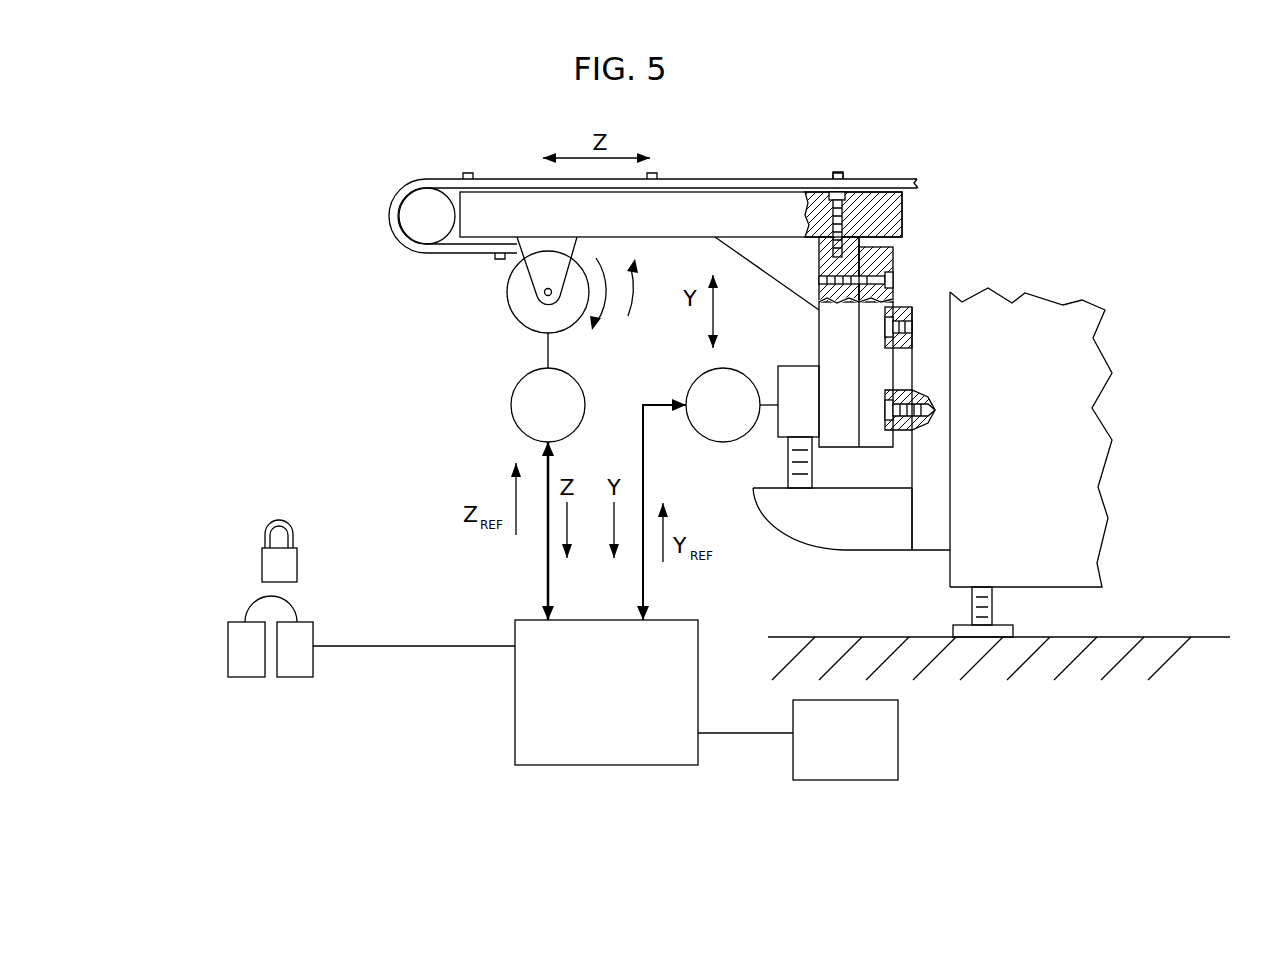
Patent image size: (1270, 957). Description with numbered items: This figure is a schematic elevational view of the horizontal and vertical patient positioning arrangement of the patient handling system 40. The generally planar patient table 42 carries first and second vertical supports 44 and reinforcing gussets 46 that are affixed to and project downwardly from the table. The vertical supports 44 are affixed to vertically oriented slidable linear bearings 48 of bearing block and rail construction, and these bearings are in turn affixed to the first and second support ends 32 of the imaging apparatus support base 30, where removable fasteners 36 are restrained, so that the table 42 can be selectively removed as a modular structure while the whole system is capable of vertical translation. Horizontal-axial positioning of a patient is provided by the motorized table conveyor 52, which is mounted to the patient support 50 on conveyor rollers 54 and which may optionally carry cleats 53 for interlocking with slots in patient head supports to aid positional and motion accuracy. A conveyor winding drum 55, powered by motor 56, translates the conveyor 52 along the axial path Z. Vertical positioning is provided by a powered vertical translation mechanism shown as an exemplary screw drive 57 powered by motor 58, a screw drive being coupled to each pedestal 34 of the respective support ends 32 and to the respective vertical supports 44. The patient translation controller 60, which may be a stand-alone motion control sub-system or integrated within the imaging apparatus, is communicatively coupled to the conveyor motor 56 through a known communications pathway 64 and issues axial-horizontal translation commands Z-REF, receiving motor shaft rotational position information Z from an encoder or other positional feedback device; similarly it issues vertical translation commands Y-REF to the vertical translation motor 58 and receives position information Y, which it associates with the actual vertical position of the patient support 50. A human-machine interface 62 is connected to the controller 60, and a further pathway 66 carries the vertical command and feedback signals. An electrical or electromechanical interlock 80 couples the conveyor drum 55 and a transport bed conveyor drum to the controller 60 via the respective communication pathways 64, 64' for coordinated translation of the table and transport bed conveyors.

The support base 30 is at (1144, 503).
The first and second support ends 32 is at (925, 537).
The pedestal 34 is at (797, 512).
The removable fasteners 36 is at (893, 282).
The patient handling system 40 is at (424, 321).
The patient table 42 is at (725, 203).
The first and second vertical supports 44 is at (900, 222).
The reinforcing gussets 46 is at (763, 253).
The slidable linear bearings 48 is at (899, 261).
The patient support 50 is at (318, 257).
The table conveyor 52 is at (483, 180).
The cleats 53 is at (843, 170).
The conveyor rollers 54 is at (412, 208).
The conveyor winding drum 55 is at (527, 304).
The conveyor motor 56 is at (520, 410).
The screw drive 57 is at (795, 432).
The vertical translation motor 58 is at (705, 390).
The patient translation controller 60 is at (528, 722).
The HMI 62 is at (898, 733).
The communications pathway 64 is at (497, 531).
The communication pathway 64' is at (404, 697).
The Y control signal line 66 is at (643, 575).
The interlock 80 is at (222, 562).